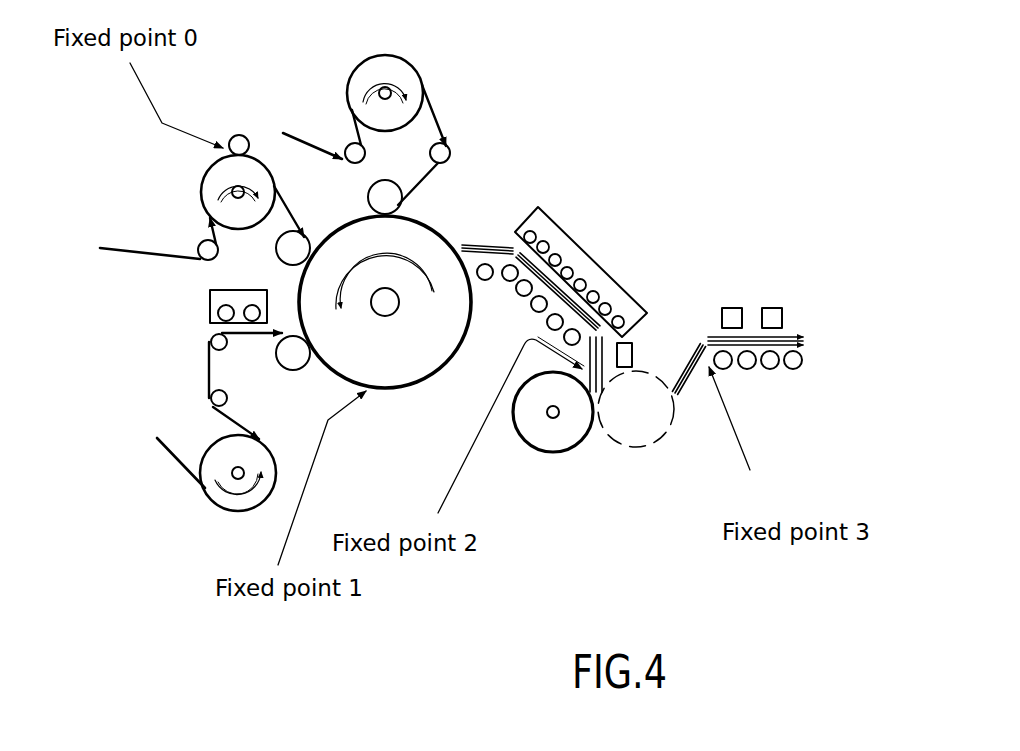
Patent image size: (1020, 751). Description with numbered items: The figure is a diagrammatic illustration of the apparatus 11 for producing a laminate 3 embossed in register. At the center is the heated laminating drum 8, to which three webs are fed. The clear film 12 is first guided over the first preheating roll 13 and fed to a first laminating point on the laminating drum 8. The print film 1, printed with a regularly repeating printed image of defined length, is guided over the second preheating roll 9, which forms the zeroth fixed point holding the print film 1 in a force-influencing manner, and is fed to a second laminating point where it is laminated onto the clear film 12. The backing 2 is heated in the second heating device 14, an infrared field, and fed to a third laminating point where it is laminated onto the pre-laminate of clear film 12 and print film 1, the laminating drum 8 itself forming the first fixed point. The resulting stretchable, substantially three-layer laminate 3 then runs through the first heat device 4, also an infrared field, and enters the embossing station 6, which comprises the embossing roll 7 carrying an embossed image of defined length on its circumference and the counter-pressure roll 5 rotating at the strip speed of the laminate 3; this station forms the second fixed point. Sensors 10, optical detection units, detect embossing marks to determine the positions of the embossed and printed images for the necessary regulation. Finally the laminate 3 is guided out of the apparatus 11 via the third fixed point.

The print film 1 is at (153, 252).
The backing 2 is at (207, 360).
The laminate 3 is at (470, 247).
The first heat device 4 is at (587, 257).
The counter-pressure roll 5 is at (542, 430).
The embossing station 6 is at (593, 456).
The embossing roll 7 is at (643, 435).
The laminating drum 8 is at (382, 358).
The second preheating roll 9 is at (200, 183).
The sensors 10 is at (732, 305).
The apparatus 11 is at (698, 97).
The clear film 12 is at (297, 135).
The first preheating roll 13 is at (412, 80).
The second heating device 14 is at (220, 302).